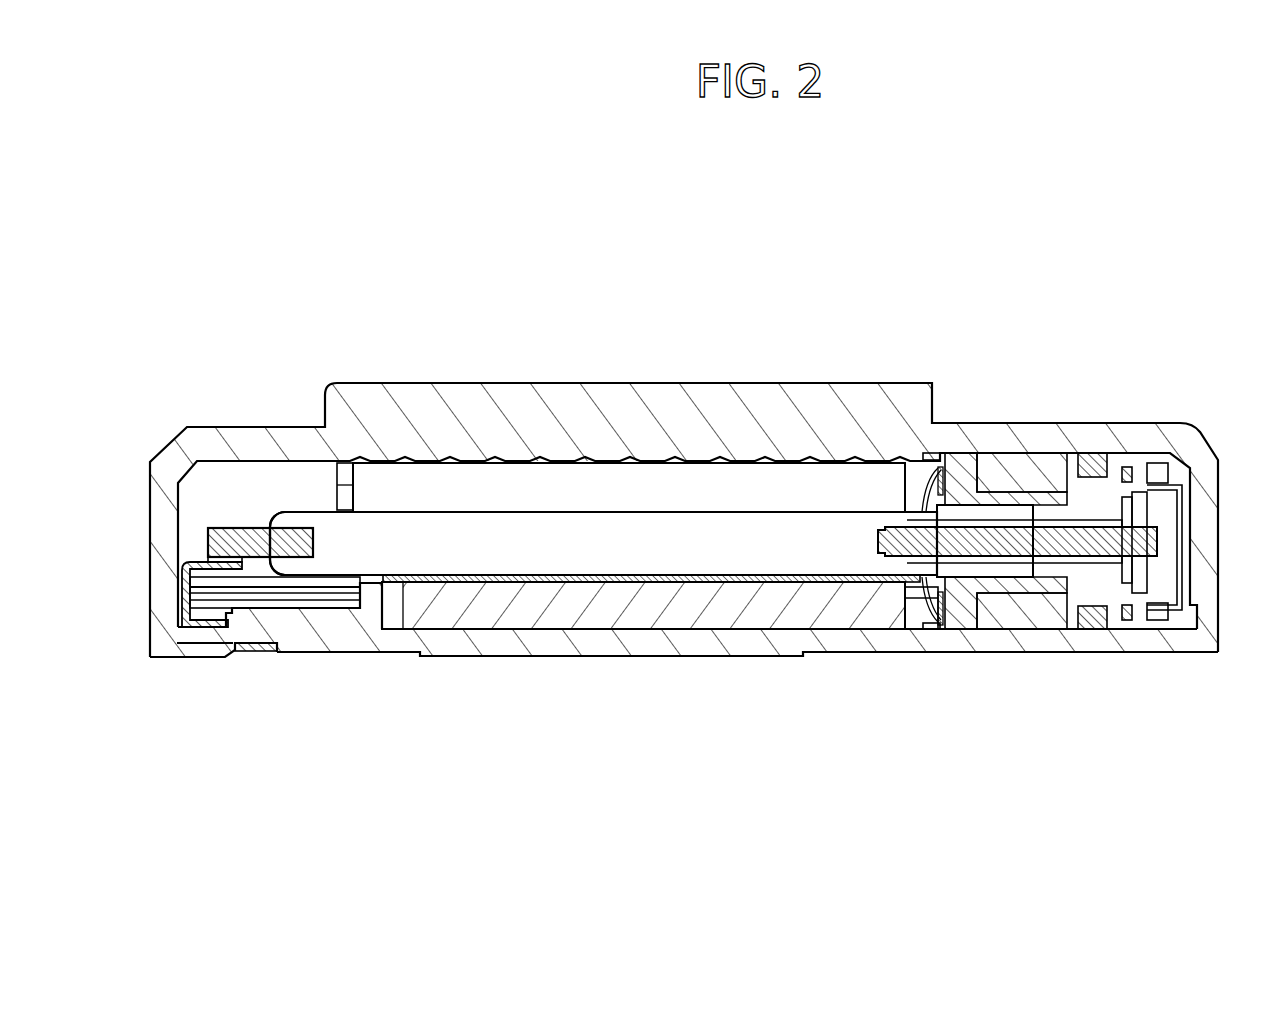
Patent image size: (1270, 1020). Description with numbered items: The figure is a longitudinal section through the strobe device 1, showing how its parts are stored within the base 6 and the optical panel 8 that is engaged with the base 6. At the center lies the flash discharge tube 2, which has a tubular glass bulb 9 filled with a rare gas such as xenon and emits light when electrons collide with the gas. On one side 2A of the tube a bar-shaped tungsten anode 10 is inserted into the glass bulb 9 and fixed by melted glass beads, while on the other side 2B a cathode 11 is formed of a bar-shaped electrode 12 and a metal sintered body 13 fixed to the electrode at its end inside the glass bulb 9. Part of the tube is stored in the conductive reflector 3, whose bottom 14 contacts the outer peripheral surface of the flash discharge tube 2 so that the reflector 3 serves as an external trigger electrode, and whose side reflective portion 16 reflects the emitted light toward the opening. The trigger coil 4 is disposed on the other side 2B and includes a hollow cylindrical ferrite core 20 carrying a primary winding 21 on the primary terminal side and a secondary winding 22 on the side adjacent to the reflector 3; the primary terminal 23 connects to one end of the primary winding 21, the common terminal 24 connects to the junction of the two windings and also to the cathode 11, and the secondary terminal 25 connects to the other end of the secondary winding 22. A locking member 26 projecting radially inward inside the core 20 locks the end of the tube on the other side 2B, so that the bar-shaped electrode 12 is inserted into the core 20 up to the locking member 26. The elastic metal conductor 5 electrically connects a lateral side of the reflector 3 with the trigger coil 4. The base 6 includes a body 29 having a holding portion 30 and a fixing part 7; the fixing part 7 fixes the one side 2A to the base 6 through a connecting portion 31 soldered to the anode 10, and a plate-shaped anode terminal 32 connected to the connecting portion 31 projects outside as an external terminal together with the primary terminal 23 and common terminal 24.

The strobe device 1 is at (1243, 294).
The flash discharge tube 2 is at (685, 505).
The one side 2A is at (298, 514).
The other side 2B is at (1002, 565).
The reflector 3 is at (487, 311).
The trigger coil 4 is at (943, 353).
The conductor 5 is at (912, 457).
The base 6 is at (823, 645).
The fixing part 7 is at (185, 565).
The optical panel 8 is at (452, 398).
The glass bulb 9 is at (300, 514).
The anode 10 is at (227, 530).
The cathode 11 is at (960, 700).
The bar-shaped electrode 12 is at (967, 560).
The metal sintered body 13 is at (897, 562).
The bottom 14 is at (520, 574).
The side reflective portion 16 is at (560, 480).
The core 20 is at (962, 470).
The primary winding 21 is at (1093, 462).
The secondary winding 22 is at (1030, 468).
The primary terminal 23 is at (1130, 472).
The common terminal 24 is at (1180, 488).
The secondary terminal 25 is at (942, 480).
The locking member 26 is at (1045, 600).
The body 29 is at (330, 633).
The holding portion 30 is at (558, 625).
The connecting portion 31 is at (208, 555).
The anode terminal 32 is at (250, 653).